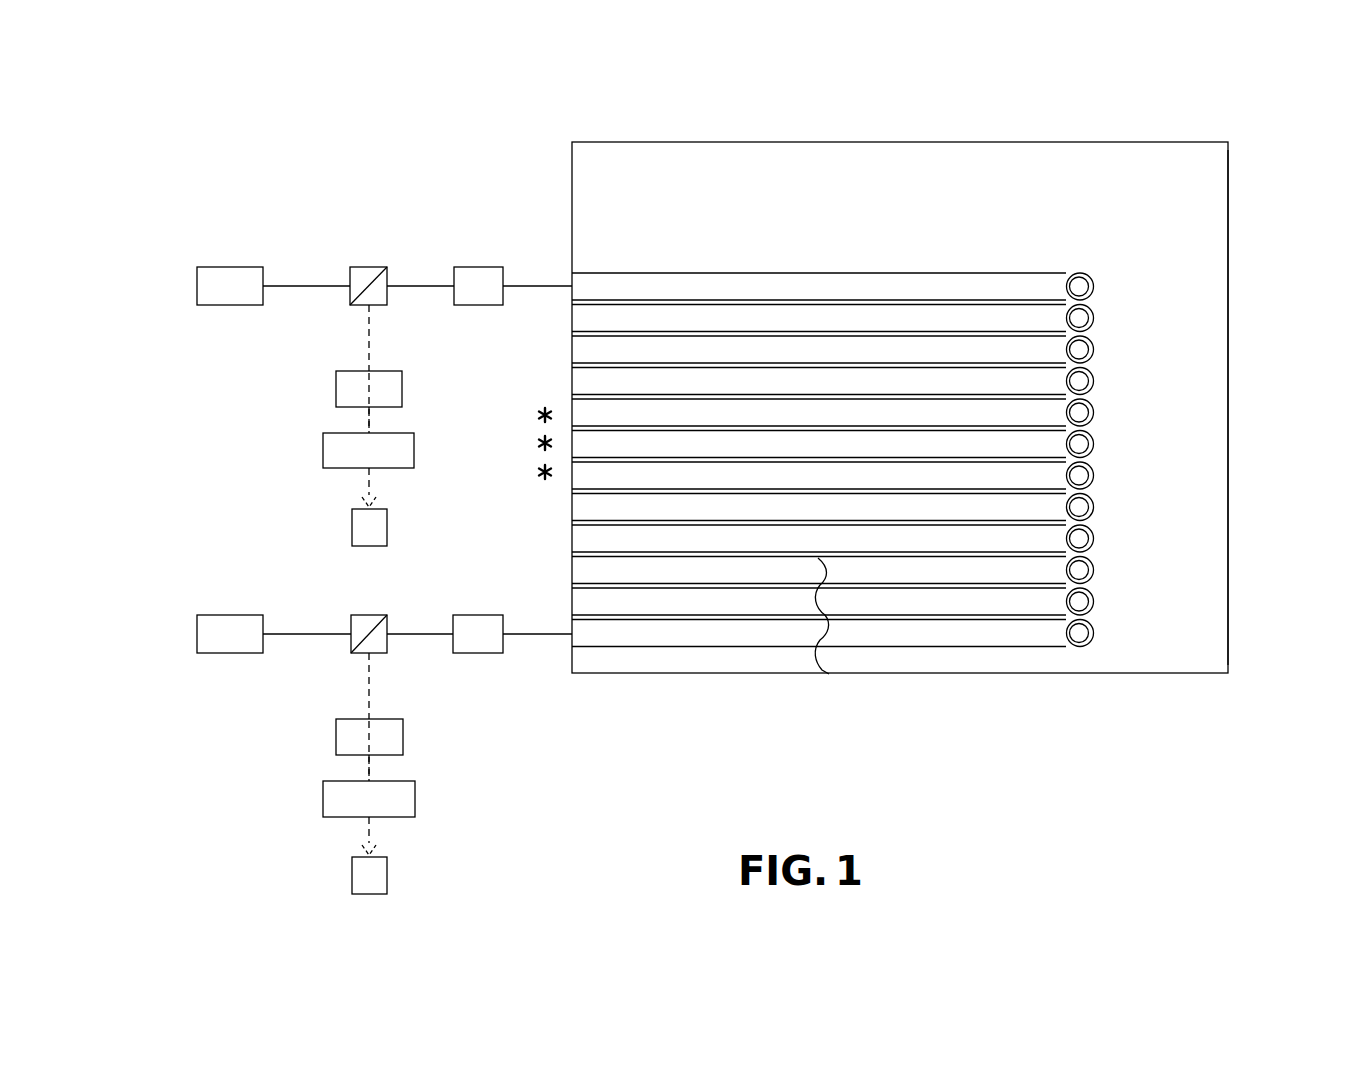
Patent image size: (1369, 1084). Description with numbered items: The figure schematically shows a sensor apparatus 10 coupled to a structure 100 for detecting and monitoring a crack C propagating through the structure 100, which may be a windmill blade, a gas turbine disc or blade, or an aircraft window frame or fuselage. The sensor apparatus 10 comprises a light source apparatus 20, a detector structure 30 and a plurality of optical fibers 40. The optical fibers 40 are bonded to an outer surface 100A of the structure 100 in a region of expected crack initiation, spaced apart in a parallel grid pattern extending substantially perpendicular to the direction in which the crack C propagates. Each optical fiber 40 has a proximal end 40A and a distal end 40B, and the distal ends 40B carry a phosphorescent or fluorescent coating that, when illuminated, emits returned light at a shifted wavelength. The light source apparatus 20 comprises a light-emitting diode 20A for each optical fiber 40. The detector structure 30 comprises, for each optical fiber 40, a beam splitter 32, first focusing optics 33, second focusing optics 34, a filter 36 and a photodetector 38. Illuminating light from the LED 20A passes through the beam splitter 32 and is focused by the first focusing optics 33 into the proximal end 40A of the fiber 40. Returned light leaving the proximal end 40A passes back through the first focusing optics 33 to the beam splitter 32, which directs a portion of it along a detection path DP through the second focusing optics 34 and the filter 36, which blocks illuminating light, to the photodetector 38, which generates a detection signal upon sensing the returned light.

The sensor apparatus 10 is at (293, 203).
The light source apparatus 20 is at (192, 297).
The light-emitting diode 20A is at (232, 267).
The beam splitter 32 is at (366, 272).
The first focusing optics 33 is at (470, 262).
The optical fiber proximal end 40A is at (503, 287).
The second focusing optics 34 is at (390, 362).
The detector structure 30 is at (328, 385).
The detection path DP is at (370, 418).
The filter 36 is at (320, 448).
The photodetector 38 is at (350, 521).
The optical fibers 40 is at (645, 508).
The optical fiber distal end 40B is at (1083, 570).
The crack C is at (823, 633).
The structure 100 is at (992, 690).
The outer surface 100A is at (1197, 583).